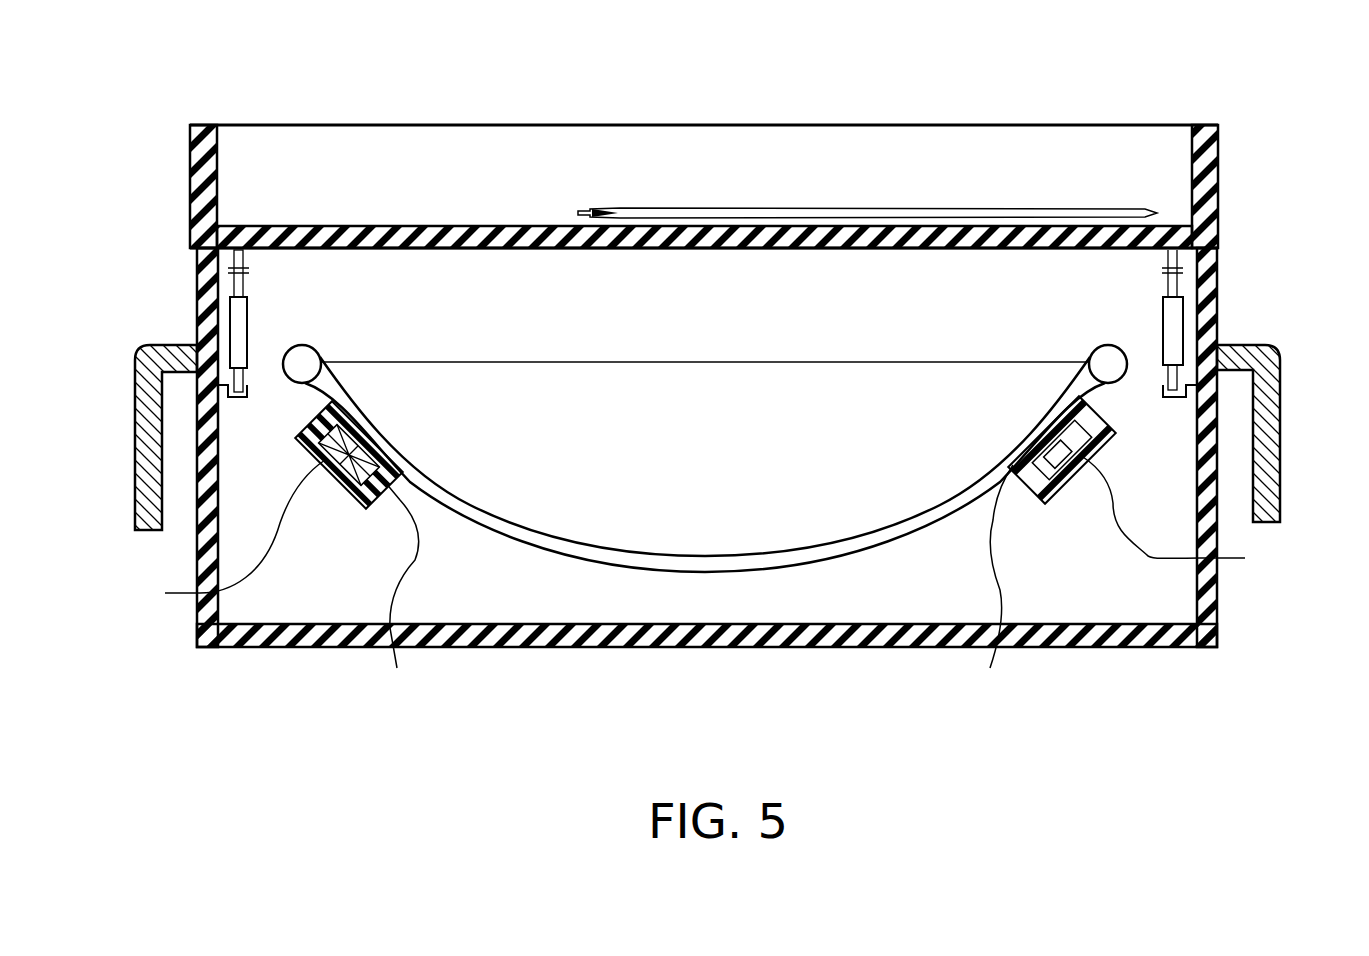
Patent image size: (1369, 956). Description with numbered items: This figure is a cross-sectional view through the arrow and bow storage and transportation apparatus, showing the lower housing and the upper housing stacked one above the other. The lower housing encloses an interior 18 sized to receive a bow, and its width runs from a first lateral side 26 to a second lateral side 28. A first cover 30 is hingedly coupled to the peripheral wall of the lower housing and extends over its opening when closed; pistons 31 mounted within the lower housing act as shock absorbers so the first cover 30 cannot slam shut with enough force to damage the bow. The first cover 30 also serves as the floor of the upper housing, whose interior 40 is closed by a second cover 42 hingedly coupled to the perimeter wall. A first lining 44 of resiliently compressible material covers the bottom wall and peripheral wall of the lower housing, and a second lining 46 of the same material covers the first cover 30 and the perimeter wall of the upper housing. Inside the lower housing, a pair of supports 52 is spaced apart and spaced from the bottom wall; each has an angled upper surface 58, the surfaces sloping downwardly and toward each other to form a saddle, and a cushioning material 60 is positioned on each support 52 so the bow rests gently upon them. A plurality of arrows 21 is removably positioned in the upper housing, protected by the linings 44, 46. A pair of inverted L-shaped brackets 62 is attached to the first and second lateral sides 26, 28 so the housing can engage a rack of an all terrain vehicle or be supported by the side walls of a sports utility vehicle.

The interior 18 is at (706, 488).
The arrows 21 is at (898, 207).
The first lateral side 26 is at (1218, 628).
The second lateral side 28 is at (197, 628).
The first cover 30 is at (1133, 250).
The pistons 31 is at (242, 320).
The interior 40 is at (660, 155).
The second cover 42 is at (739, 140).
The first lining 44 is at (930, 648).
The second lining 46 is at (1213, 173).
The supports 52 is at (363, 480).
The angled upper surface 58 is at (702, 536).
The cushioning material 60 is at (693, 588).
The brackets 62 is at (135, 478).